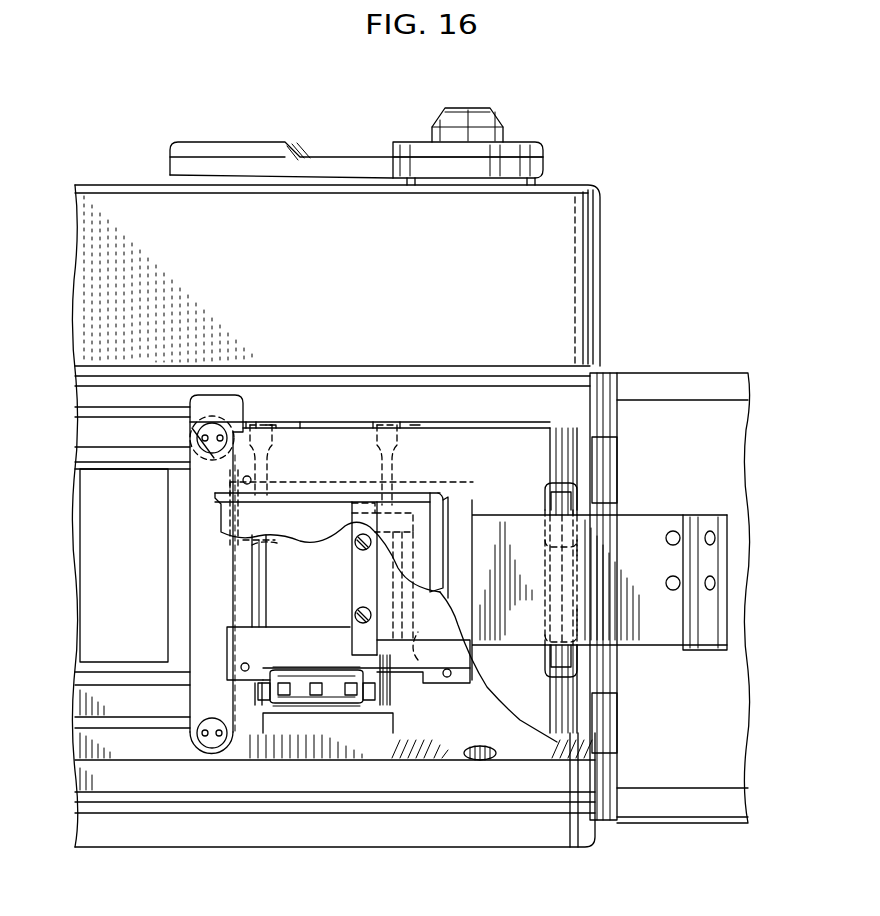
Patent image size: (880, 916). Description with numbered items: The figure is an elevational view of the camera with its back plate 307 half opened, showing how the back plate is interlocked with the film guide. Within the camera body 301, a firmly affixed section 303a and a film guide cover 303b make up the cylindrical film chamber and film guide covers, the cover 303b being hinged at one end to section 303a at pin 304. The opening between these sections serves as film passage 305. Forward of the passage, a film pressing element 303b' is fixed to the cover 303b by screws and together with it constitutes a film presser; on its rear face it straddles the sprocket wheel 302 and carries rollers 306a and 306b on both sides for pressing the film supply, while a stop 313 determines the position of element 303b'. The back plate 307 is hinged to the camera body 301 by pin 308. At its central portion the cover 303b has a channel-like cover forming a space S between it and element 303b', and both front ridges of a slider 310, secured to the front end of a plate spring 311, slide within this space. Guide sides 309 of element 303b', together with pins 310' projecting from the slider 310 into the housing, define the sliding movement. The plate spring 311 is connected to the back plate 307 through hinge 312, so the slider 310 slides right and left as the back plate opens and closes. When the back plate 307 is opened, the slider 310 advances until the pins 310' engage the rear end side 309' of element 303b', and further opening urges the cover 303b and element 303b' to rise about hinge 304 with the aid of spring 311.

The camera body 301 is at (138, 737).
The sprocket wheel 302 is at (332, 678).
The film chamber section 303a is at (555, 493).
The film guide cover 303b is at (370, 412).
The film pressing element 303b' is at (423, 676).
The pin 304 is at (564, 440).
The film passage 305 is at (304, 540).
The roller 306a is at (270, 440).
The roller 306b is at (400, 440).
The back plate 307 is at (712, 412).
The pin 308 is at (607, 449).
The rail-shaped guide 309 is at (234, 552).
The rear end side of element 303b' 309' is at (435, 648).
The slider 310 is at (351, 578).
The pins 310' is at (328, 608).
The plate spring 311 is at (640, 535).
The hinge for plate spring 312 is at (694, 522).
The stop 313 is at (213, 748).
The space S is at (447, 492).